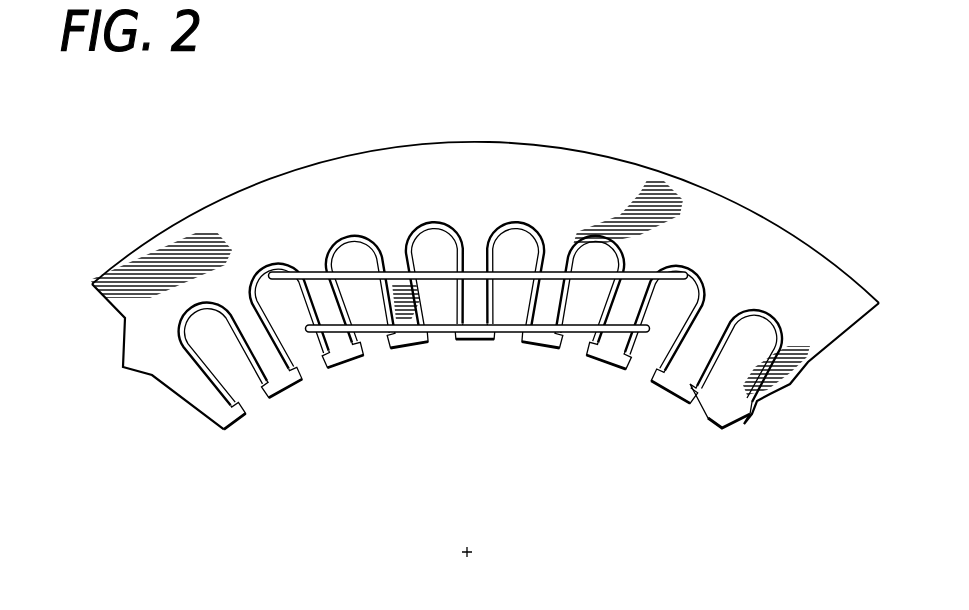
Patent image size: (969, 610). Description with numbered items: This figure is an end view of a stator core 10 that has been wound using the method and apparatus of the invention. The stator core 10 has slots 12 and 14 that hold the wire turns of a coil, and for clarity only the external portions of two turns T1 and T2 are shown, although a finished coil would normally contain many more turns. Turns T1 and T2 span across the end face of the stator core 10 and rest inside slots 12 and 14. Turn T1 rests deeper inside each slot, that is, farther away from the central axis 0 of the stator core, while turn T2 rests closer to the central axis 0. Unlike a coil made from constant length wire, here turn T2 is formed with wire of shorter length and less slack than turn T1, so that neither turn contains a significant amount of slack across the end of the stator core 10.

The stator core 10 is at (572, 136).
The slot 12 is at (272, 288).
The slot 14 is at (678, 293).
The turn T1 is at (560, 277).
The turn T2 is at (513, 326).
The central axis 0 is at (471, 549).